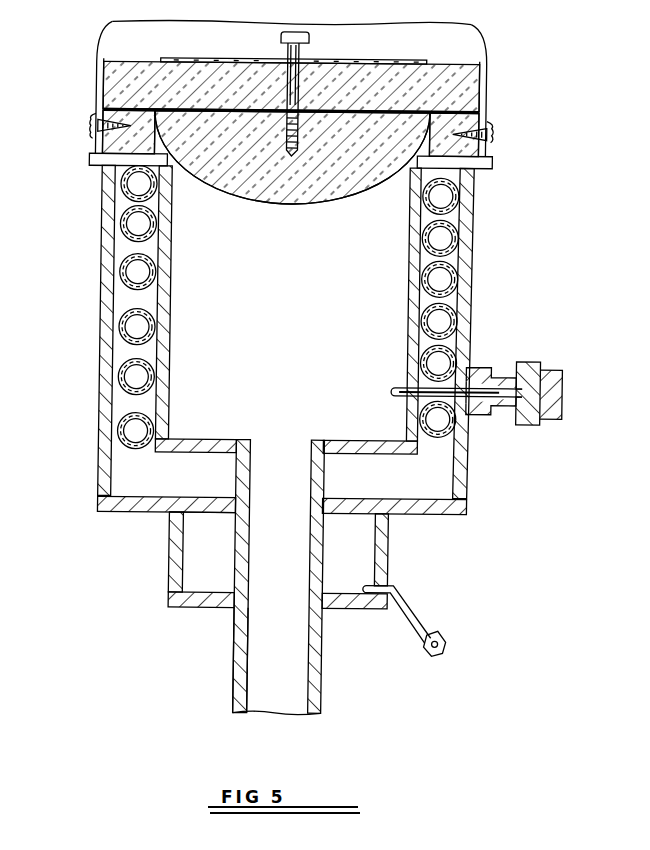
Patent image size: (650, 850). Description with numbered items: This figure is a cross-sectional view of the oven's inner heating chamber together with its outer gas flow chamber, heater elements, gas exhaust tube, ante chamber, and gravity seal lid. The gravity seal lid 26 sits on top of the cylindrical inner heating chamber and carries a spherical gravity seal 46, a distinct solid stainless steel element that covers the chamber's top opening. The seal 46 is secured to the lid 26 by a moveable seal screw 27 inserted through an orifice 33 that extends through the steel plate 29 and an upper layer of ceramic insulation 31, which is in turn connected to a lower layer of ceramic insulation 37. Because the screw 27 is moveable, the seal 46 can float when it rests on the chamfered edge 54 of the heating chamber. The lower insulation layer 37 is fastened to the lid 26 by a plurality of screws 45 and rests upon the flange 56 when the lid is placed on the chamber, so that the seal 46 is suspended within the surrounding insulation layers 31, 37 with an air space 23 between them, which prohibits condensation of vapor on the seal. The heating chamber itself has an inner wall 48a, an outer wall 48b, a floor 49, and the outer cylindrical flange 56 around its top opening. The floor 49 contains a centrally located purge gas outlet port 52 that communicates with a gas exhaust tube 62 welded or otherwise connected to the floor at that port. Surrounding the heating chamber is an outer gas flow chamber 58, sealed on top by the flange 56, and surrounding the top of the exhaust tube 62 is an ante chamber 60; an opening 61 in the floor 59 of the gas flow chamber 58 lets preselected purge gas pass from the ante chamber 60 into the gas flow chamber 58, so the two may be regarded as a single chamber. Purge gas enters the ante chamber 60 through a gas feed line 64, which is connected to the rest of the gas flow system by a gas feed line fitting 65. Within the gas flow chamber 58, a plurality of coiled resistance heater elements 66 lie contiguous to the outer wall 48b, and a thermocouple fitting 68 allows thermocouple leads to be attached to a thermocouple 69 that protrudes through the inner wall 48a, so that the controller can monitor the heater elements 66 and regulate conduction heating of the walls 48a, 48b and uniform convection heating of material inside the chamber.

The air space 23 is at (412, 110).
The gravity seal lid 26 is at (100, 42).
The seal screw 27 is at (306, 40).
The steel plate 29 is at (372, 62).
The upper layer of ceramic insulation 31 is at (130, 63).
The orifice 33 is at (283, 52).
The lower layer of ceramic insulation 37 is at (95, 120).
The screws 45 is at (486, 128).
The spherical gravity seal 46 is at (292, 206).
The inner wall 48a is at (170, 340).
The outer wall 48b is at (410, 216).
The floor 49 is at (347, 440).
The purge gas outlet port 52 is at (255, 440).
The chamfered edge 54 is at (152, 148).
The flange 56 is at (489, 158).
The outer gas flow chamber 58 is at (100, 432).
The floor 59 is at (138, 514).
The ante chamber 60 is at (172, 570).
The opening 61 is at (190, 500).
The gas exhaust tube 62 is at (238, 640).
The gas feed line 64 is at (410, 590).
The gas feed line fitting 65 is at (444, 636).
The coiled resistance heater elements 66 is at (458, 252).
The thermocouple fitting 68 is at (492, 372).
The thermocouple 69 is at (392, 385).